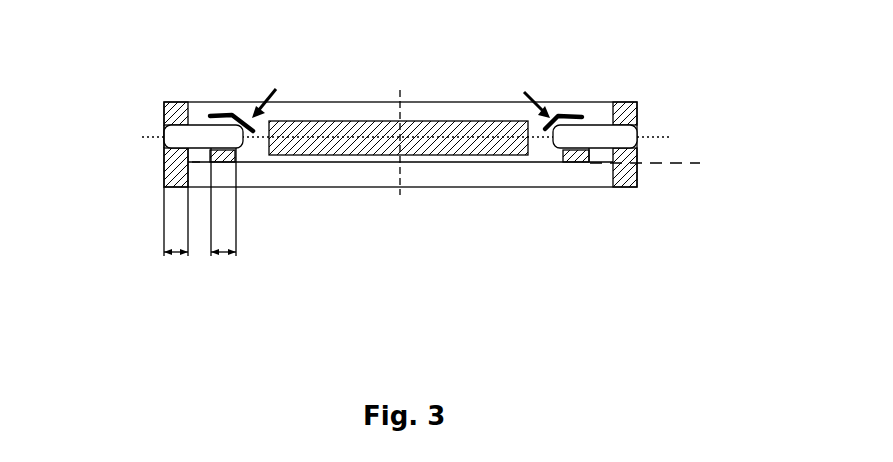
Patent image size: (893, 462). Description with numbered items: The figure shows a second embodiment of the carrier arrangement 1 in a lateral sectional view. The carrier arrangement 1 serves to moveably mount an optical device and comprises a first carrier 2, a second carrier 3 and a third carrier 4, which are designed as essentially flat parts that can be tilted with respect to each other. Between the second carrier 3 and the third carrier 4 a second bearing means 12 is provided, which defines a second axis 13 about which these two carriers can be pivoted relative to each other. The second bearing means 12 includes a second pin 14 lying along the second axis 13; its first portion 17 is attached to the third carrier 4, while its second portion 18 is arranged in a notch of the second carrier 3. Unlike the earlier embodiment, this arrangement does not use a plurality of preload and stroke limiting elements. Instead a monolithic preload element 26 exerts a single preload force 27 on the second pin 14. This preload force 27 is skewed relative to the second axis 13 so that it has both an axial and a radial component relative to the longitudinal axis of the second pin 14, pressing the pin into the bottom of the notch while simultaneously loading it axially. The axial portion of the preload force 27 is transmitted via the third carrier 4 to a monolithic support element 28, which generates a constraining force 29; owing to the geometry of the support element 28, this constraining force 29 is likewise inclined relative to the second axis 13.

The carrier arrangement 1 is at (665, 58).
The first carrier 2 is at (497, 153).
The second carrier 3 is at (567, 161).
The third carrier 4 is at (634, 187).
The second bearing means 12 is at (148, 70).
The second axis 13 is at (165, 136).
The second pin 14 is at (165, 130).
The first portion 17 is at (176, 256).
The second portion 18 is at (224, 256).
The preload element 26 is at (230, 113).
The preload force 27 is at (276, 89).
The support element 28 is at (567, 115).
The constraining force 29 is at (524, 92).